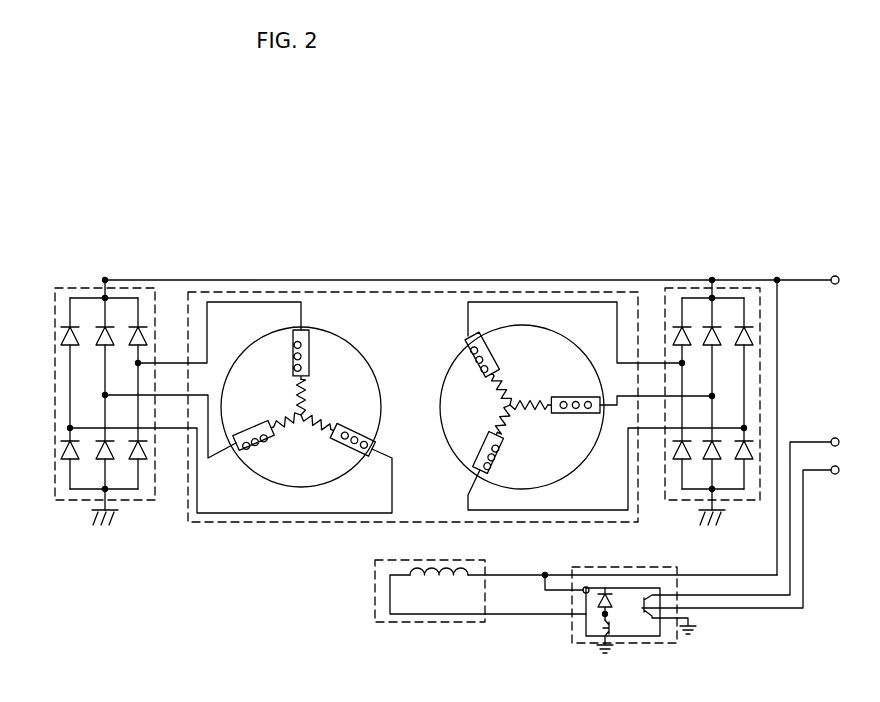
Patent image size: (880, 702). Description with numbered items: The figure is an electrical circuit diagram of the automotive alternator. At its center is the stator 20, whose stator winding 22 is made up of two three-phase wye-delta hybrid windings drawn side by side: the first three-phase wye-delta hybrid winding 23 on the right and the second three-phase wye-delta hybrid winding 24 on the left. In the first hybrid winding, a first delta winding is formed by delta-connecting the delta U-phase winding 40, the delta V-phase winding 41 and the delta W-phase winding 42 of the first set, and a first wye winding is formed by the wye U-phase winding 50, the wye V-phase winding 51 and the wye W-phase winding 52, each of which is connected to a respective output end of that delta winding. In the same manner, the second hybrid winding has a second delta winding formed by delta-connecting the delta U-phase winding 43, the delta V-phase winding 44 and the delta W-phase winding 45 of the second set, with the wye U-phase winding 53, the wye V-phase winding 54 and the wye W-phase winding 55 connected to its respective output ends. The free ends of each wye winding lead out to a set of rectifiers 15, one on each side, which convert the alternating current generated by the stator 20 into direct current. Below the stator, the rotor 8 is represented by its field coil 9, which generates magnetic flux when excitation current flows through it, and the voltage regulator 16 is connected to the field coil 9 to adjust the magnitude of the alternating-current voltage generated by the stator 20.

The rotor 8 is at (470, 625).
The field coil 9 is at (438, 590).
The rectifiers 15 is at (85, 284).
The voltage regulator 16 is at (682, 566).
The stator 20 is at (597, 292).
The stator winding 22 is at (425, 232).
The first three-phase wye-delta hybrid winding 23 is at (458, 342).
The second three-phase wye-delta hybrid winding 24 is at (350, 340).
The delta-U1-phase winding 40 is at (500, 405).
The delta-V1-phase winding 41 is at (544, 390).
The delta-W1-phase winding 42 is at (537, 430).
The delta-U2-phase winding 43 is at (282, 397).
The delta-V2-phase winding 44 is at (322, 393).
The delta-W2-phase winding 45 is at (300, 432).
The wye-U1-phase winding 50 is at (513, 348).
The wye-V1-phase winding 51 is at (577, 389).
The wye-W1-phase winding 52 is at (508, 460).
The wye-U2-phase winding 53 is at (293, 348).
The wye-V2-phase winding 54 is at (357, 422).
The wye-W2-phase winding 55 is at (258, 453).